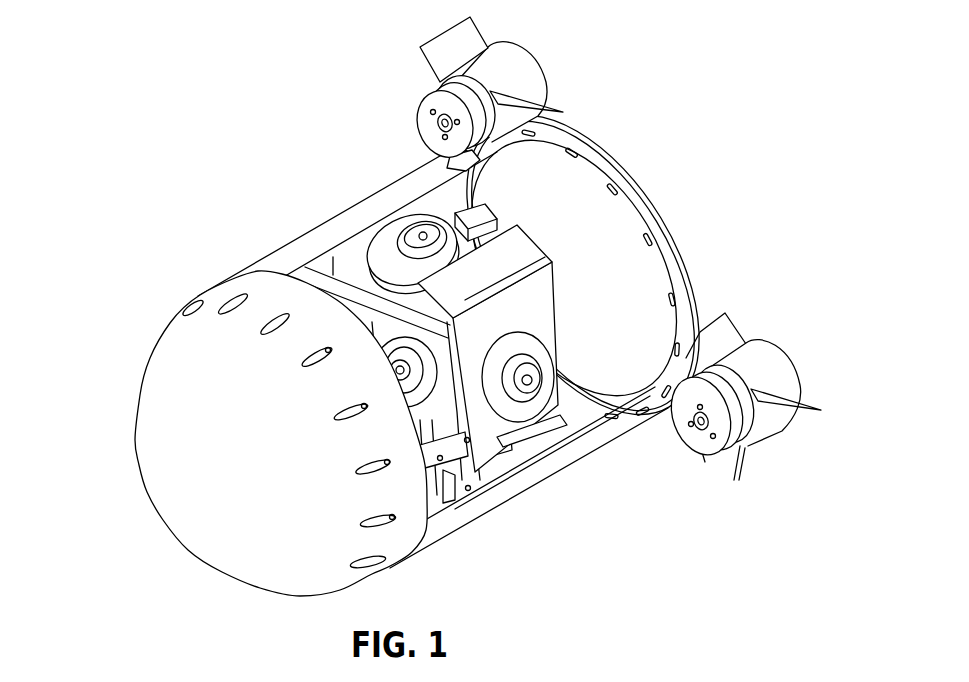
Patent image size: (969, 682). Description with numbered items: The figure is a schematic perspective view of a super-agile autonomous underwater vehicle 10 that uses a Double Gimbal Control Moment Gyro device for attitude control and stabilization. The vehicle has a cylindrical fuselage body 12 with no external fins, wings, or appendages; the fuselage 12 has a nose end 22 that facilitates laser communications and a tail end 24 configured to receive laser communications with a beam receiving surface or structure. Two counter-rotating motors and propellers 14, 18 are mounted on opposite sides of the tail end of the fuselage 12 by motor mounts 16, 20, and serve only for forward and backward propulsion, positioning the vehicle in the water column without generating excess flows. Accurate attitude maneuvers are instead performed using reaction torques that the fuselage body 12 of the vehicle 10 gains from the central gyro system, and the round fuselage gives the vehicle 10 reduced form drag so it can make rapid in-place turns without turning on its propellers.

The underwater vehicle 10 is at (152, 118).
The fuselage body 12 is at (318, 226).
The motor and propeller 14 is at (491, 88).
The motor mount 16 is at (433, 127).
The motor and propeller 18 is at (755, 402).
The motor mount 20 is at (707, 452).
The nose end 22 is at (130, 380).
The tail end 24 is at (672, 190).